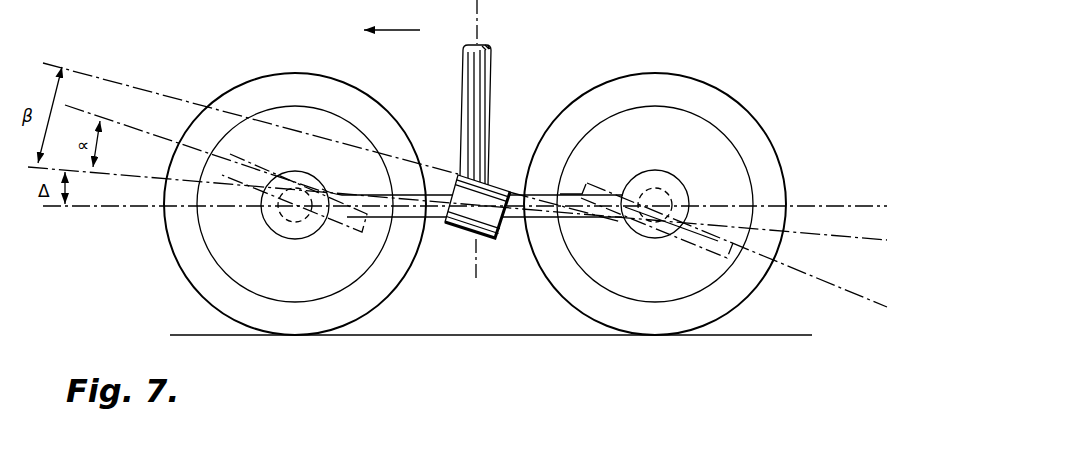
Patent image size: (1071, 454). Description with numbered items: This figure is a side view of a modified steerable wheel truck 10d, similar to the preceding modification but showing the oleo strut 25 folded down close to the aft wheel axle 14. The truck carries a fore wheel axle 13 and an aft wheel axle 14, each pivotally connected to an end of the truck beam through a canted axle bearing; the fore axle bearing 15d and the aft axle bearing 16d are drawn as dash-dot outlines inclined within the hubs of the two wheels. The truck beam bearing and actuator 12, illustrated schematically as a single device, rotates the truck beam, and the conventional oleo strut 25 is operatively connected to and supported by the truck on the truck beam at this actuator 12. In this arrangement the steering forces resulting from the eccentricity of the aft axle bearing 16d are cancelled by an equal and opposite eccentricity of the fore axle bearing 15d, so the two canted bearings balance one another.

The steerable wheel truck 10d is at (564, 46).
The truck beam bearing and actuator 12 is at (495, 238).
The fore wheel axle 13 is at (282, 219).
The aft wheel axle 14 is at (665, 193).
The axle bearing 15d is at (340, 219).
The axle bearing 16d is at (597, 182).
The oleo strut 25 is at (492, 117).